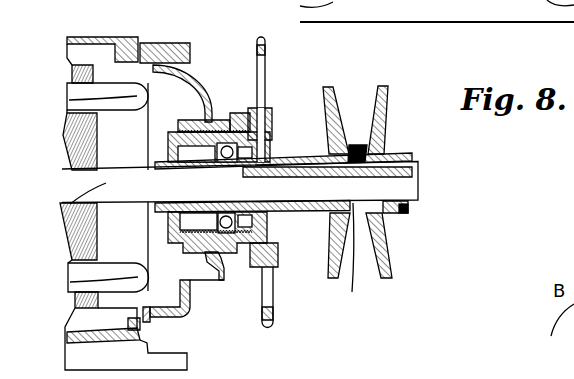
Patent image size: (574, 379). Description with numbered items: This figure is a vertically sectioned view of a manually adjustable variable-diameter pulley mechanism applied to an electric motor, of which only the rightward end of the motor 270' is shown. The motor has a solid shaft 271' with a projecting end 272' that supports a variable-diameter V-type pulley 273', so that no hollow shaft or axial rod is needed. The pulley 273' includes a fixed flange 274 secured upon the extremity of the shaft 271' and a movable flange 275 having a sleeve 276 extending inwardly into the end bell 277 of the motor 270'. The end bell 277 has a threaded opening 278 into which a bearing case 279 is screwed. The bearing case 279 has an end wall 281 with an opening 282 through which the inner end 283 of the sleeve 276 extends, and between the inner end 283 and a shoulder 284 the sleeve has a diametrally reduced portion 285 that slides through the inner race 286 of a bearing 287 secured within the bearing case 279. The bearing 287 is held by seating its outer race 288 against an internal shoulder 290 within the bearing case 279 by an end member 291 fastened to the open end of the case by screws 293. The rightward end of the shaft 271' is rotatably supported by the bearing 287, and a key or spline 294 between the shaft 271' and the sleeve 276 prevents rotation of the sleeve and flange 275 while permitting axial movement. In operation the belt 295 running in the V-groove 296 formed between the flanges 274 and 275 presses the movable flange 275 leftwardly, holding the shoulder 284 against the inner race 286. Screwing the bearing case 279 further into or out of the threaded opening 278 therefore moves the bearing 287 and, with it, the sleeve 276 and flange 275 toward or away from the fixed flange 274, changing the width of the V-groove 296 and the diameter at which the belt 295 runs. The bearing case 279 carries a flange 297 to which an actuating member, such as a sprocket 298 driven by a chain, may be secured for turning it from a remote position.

The motor 270' is at (128, 87).
The solid shaft 271' is at (102, 276).
The projecting end 272' is at (274, 182).
The variable-diameter V-type pulley 273' is at (383, 76).
The fixed flange 274 is at (386, 96).
The movable flange 275 is at (328, 95).
The sleeve 276 is at (291, 205).
The end bell 277 is at (196, 65).
The threaded opening 278 is at (206, 120).
The bearing case 279 is at (163, 162).
The end wall 281 is at (176, 221).
The opening 282 is at (167, 163).
The inner end 283 is at (160, 167).
The shoulder 284 is at (258, 153).
The diametrally reduced portion 285 is at (219, 156).
The inner race 286 is at (207, 238).
The bearing 287 is at (222, 220).
The outer race 288 is at (234, 120).
The internal shoulder 290 is at (187, 169).
The end member 291 is at (273, 118).
The screws 293 is at (257, 260).
The key or spline 294 is at (312, 168).
The belt 295 is at (351, 144).
The V-groove 296 is at (359, 257).
The flange 297 is at (273, 281).
The sprocket 298 is at (268, 46).